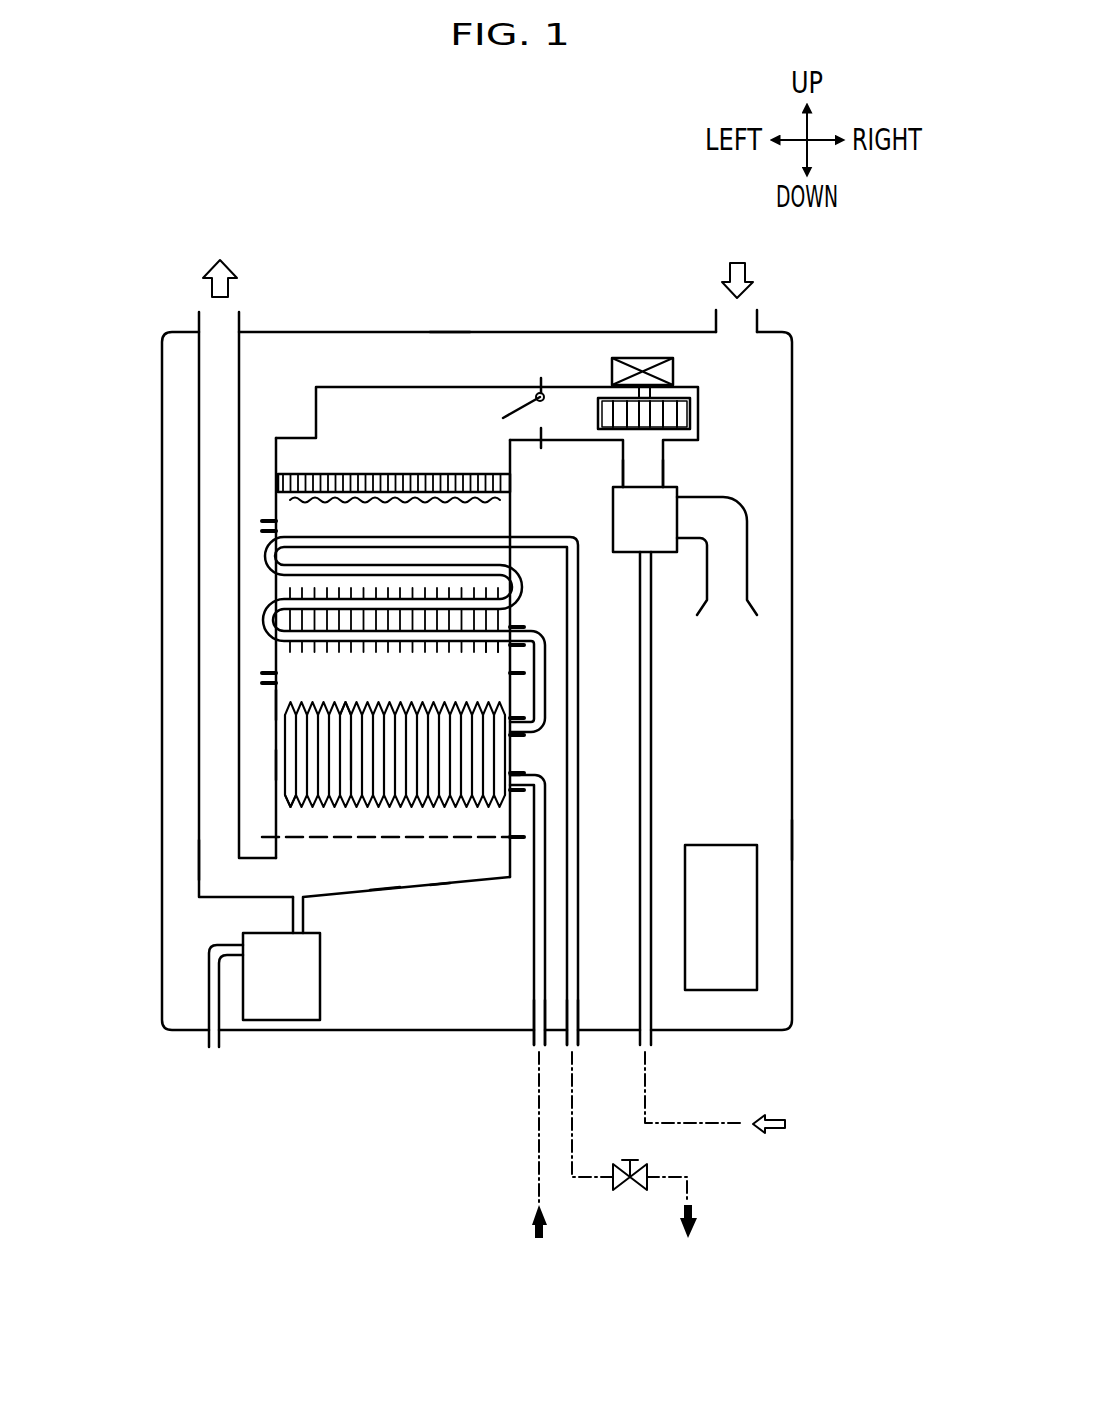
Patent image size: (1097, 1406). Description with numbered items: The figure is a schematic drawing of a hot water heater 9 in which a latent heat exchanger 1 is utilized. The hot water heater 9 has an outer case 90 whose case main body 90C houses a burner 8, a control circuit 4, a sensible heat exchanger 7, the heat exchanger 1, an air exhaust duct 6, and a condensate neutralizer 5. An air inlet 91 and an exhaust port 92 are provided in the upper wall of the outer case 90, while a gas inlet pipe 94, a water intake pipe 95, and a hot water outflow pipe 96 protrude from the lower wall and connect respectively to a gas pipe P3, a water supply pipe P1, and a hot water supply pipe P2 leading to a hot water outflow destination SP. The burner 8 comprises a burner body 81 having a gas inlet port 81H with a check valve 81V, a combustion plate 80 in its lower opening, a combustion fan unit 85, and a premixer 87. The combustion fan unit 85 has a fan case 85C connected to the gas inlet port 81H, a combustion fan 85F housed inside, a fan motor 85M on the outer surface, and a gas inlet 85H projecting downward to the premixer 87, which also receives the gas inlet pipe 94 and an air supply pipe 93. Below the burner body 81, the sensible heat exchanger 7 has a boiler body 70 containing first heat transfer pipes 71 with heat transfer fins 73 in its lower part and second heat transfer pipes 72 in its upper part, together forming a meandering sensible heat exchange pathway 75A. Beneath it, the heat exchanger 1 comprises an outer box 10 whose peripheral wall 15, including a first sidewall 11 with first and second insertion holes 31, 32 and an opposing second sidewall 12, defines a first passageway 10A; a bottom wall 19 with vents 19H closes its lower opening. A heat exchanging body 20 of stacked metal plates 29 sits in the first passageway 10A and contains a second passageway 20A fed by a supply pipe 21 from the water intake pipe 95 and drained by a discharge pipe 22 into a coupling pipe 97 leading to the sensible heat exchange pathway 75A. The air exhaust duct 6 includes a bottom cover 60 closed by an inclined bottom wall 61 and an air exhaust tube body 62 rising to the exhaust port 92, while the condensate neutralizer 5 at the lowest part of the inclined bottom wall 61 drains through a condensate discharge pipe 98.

The heat exchanger 1 is at (265, 764).
The control circuit 4 is at (730, 928).
The condensate neutralizer 5 is at (290, 996).
The air exhaust duct 6 is at (211, 907).
The sensible heat exchanger 7 is at (346, 776).
The burner 8 is at (291, 436).
The hot water heater 9 is at (447, 260).
The outer box 10 is at (268, 685).
The first passageway 10A is at (417, 834).
The first sidewall 11 is at (515, 813).
The second sidewall 12 is at (262, 837).
The peripheral wall 15 is at (265, 704).
The bottom wall 19 is at (480, 837).
The vents 19H is at (445, 837).
The heat exchanging body 20 is at (419, 701).
The second passageway 20A is at (347, 765).
The supply pipe 21 is at (520, 763).
The discharge pipe 22 is at (515, 745).
The metal plates 29 is at (348, 702).
The first insertion hole 31 is at (515, 781).
The second insertion hole 32 is at (514, 727).
The bottom cover 60 is at (354, 899).
The inclined bottom wall 61 is at (387, 897).
The air exhaust tube body 62 is at (194, 858).
The boiler body 70 is at (266, 530).
The first heat transfer pipes 71 is at (480, 646).
The second heat transfer pipes 72 is at (385, 537).
The heat transfer fins 73 is at (445, 650).
The sensible heat exchange pathway 75A is at (340, 575).
The combustion plate 80 is at (400, 487).
The burner body 81 is at (430, 385).
The gas inlet port 81H is at (546, 426).
The check valve 81V is at (541, 378).
The combustion fan unit 85 is at (769, 412).
The fan case 85C is at (690, 413).
The combustion fan 85F is at (668, 418).
The gas inlet 85H is at (650, 470).
The fan motor 85M is at (665, 375).
The premixer 87 is at (660, 534).
The outer case 90 is at (797, 730).
The case main body 90C is at (795, 835).
The air inlet 91 is at (727, 322).
The exhaust port 92 is at (211, 314).
The air supply pipe 93 is at (750, 583).
The gas inlet pipe 94 is at (652, 782).
The water intake pipe 95 is at (534, 930).
The hot water outflow pipe 96 is at (578, 905).
The coupling pipe 97 is at (546, 650).
The condensate discharge pipe 98 is at (208, 995).
The water supply pipe P1 is at (537, 1113).
The hot water supply pipe P2 is at (588, 1178).
The gas pipe P3 is at (680, 1120).
The hot water outflow destination SP is at (629, 1192).